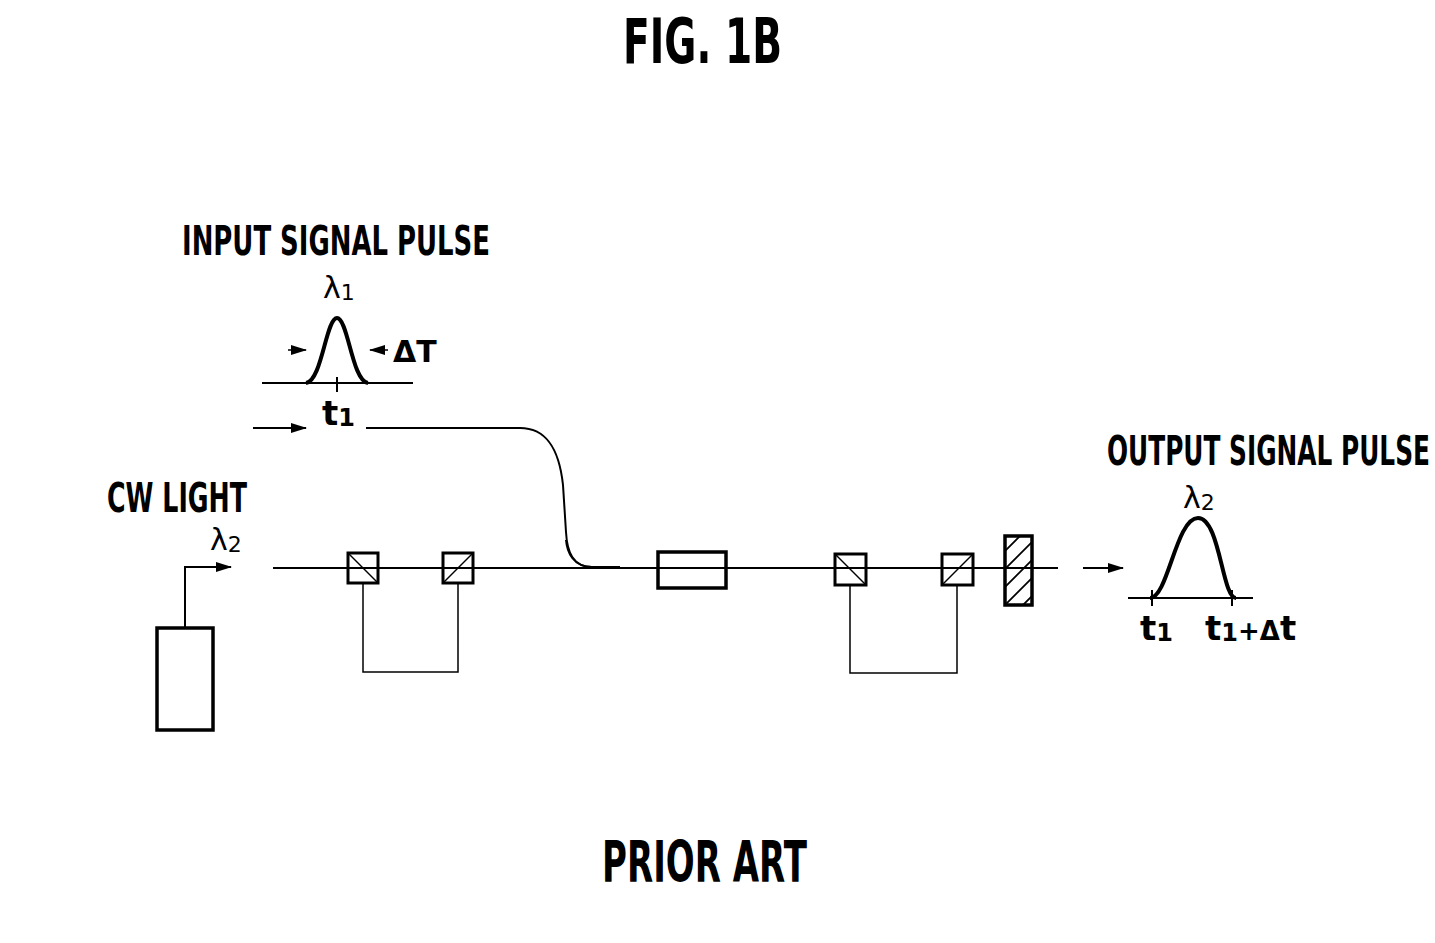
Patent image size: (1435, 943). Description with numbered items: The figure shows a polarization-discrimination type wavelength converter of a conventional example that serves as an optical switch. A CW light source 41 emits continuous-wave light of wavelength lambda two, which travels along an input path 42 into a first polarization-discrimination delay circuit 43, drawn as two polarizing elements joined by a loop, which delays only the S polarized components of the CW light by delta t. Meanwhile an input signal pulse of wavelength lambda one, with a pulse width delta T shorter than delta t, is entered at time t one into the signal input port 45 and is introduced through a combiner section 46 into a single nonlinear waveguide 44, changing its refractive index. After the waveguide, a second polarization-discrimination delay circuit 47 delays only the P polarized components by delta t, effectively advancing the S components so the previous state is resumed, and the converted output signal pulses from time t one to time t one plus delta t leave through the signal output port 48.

The CW light source 41 is at (180, 732).
The input optical path 42 is at (273, 572).
The polarization-discrimination delay circuit 43 is at (407, 677).
The nonlinear waveguide 44 is at (700, 552).
The signal input port 45 is at (366, 432).
The combiner section 46 is at (587, 550).
The polarization-discrimination delay circuit 47 is at (903, 678).
The signal output port 48 is at (1059, 572).